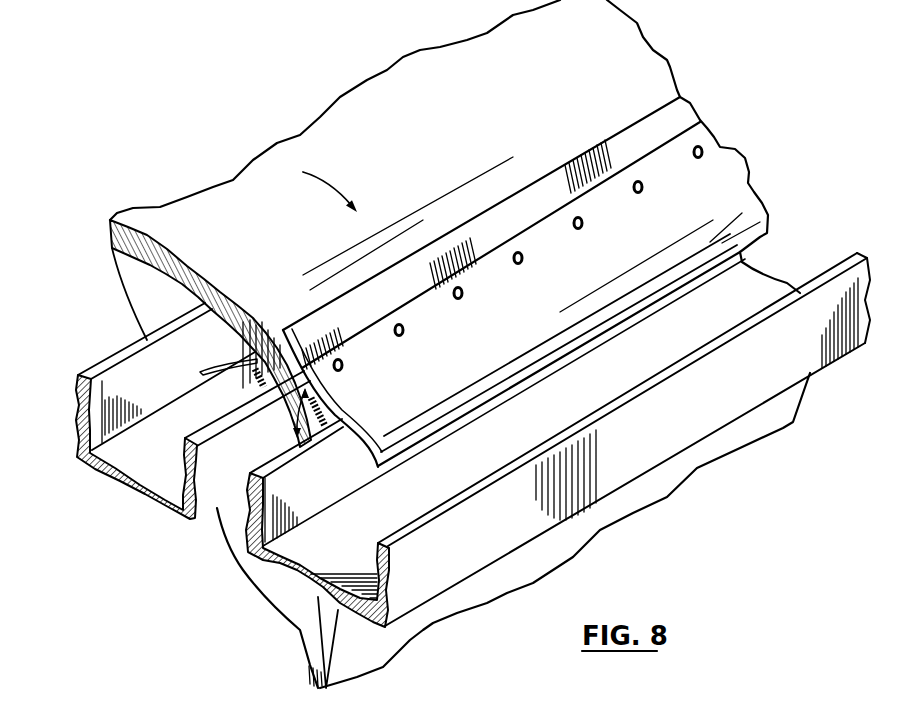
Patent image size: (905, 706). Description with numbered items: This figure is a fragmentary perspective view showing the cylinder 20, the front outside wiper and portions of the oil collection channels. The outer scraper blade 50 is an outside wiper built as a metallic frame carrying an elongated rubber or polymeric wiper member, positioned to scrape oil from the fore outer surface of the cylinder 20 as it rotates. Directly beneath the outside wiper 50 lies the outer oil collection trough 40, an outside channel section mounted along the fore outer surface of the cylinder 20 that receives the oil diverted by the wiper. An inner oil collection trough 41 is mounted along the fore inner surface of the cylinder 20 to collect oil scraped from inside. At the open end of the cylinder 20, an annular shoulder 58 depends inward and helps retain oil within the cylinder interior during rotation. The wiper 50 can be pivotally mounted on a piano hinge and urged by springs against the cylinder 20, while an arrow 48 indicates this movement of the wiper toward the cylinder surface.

The cylinder 20 is at (433, 70).
The outer oil collection trough 40 is at (796, 346).
The inner oil collection trough 41 is at (92, 410).
The insertion direction arrow 48 is at (317, 174).
The outer scraper blade 50 is at (733, 177).
The annular shoulder 58 is at (112, 244).